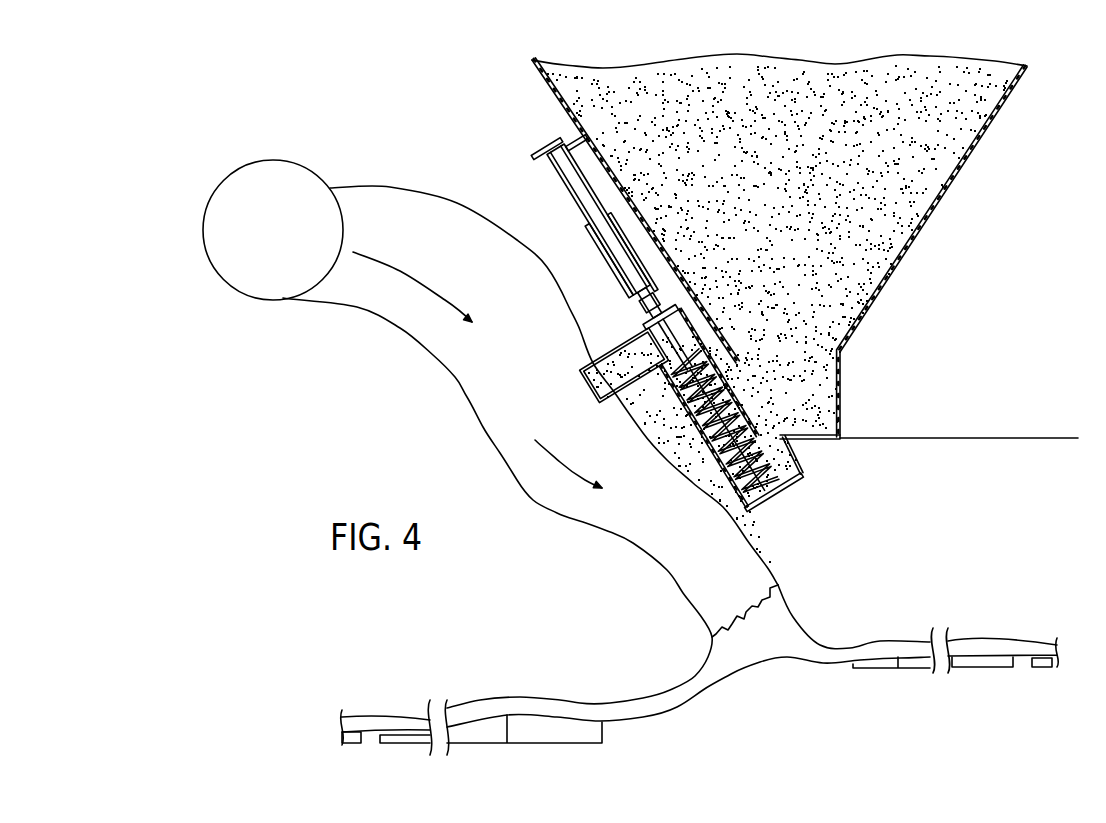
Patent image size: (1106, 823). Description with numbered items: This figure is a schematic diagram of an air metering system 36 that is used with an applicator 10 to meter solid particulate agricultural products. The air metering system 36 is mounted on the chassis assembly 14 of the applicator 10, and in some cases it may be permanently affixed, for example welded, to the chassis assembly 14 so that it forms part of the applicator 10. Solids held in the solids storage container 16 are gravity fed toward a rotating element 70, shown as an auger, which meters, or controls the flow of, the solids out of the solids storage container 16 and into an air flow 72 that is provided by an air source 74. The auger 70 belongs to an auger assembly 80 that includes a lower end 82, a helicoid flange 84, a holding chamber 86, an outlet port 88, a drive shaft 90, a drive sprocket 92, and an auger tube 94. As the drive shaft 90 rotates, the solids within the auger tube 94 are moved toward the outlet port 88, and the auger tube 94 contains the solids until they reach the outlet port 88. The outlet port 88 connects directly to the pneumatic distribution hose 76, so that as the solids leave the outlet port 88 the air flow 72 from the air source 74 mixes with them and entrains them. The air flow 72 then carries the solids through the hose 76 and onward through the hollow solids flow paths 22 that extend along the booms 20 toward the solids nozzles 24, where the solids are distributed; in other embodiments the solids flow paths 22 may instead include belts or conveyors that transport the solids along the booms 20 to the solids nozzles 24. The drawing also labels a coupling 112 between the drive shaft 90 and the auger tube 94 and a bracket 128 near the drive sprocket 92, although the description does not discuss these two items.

The applicator 10 is at (839, 52).
The chassis assembly 14 is at (959, 442).
The solids storage container 16 is at (930, 211).
The booms 20 is at (548, 743).
The solids flow paths 22 is at (378, 716).
The solids nozzles 24 is at (350, 745).
The air metering system 36 is at (576, 413).
The rotating element 70 is at (731, 391).
The air flow 72 is at (418, 277).
The air source 74 is at (272, 160).
The pneumatic distribution hose 76 is at (452, 383).
The auger assembly 80 is at (661, 301).
The lower end 82 is at (772, 490).
The helicoid flange 84 is at (755, 467).
The holding chamber 86 is at (686, 400).
The outlet port 88 is at (627, 368).
The drive shaft 90 is at (607, 266).
The drive sprocket 92 is at (536, 139).
The auger tube 94 is at (680, 318).
The coupling 112 is at (630, 312).
The mounting bracket 128 is at (548, 168).